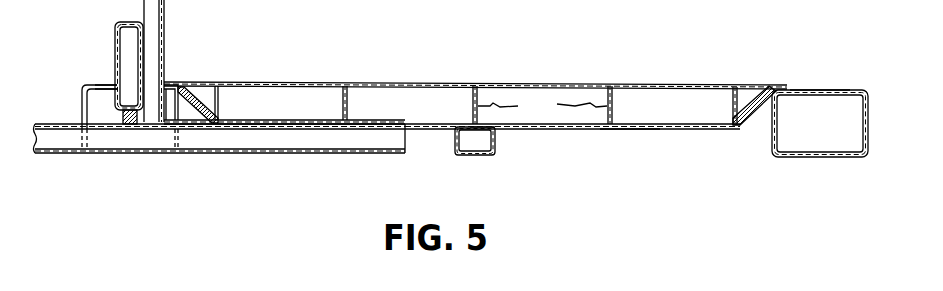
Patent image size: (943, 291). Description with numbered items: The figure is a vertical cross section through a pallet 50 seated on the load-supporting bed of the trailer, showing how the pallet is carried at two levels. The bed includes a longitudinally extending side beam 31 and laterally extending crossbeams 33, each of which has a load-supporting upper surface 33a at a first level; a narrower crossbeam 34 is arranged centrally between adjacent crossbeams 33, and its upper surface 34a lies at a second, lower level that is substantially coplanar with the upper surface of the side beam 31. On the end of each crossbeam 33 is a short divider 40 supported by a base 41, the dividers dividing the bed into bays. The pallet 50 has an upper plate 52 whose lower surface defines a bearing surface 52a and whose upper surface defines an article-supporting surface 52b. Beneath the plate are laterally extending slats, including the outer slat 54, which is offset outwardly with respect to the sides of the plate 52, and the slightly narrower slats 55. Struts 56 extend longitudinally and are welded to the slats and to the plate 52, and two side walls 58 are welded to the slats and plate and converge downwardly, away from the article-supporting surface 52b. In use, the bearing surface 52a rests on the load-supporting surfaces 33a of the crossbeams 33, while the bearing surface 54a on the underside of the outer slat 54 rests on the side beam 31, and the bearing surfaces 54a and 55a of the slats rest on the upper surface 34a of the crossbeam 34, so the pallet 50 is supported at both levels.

The side beam 31 is at (65, 153).
The crossbeam 33 is at (82, 105).
The load-supporting upper surface 33a is at (103, 85).
The crossbeam 34 is at (477, 156).
The upper surface 34a is at (485, 127).
The divider 40 is at (126, 23).
The base 41 is at (129, 124).
The pallet 50 is at (652, 133).
The upper plate 52 is at (473, 84).
The bearing surface 52a is at (688, 98).
The article-supporting surface 52b is at (625, 85).
The outer slat 54 is at (277, 120).
The bearing surface 54a is at (327, 128).
The slat 55 is at (713, 130).
The bearing surface 55a is at (624, 130).
The strut 56 is at (542, 105).
The side wall 58 is at (197, 123).